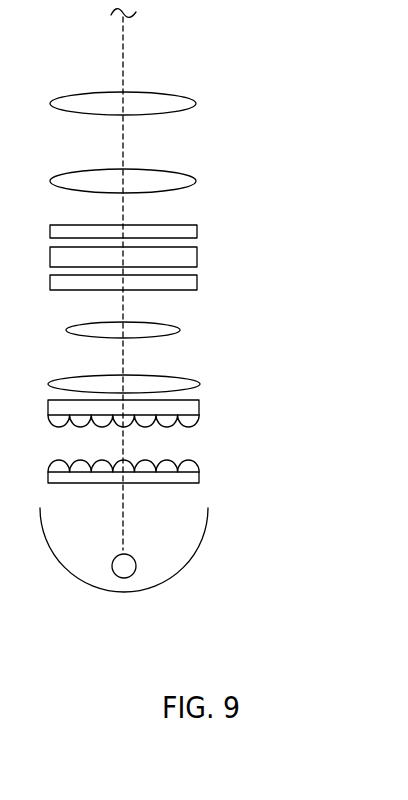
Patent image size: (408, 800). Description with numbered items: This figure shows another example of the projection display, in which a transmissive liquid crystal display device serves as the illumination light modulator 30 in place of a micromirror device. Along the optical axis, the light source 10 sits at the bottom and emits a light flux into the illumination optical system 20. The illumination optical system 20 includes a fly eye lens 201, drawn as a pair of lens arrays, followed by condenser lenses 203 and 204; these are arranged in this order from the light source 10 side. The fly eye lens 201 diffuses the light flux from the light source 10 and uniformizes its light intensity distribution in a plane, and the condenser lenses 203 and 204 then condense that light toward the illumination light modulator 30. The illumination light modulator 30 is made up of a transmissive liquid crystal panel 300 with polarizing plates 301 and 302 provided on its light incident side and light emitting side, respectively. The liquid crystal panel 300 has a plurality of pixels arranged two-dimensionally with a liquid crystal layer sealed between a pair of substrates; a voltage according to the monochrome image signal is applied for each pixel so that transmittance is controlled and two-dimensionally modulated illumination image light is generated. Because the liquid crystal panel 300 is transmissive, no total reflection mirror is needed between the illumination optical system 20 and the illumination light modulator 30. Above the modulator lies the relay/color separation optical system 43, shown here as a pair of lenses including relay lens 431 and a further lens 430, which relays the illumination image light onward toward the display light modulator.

The light source 10 is at (193, 575).
The illumination optical system 20 is at (186, 398).
The fly eye lens 201 is at (160, 441).
The condenser lens 203 is at (200, 384).
The condenser lens 204 is at (180, 329).
The illumination light modulator 30 is at (184, 256).
The liquid crystal panel 300 is at (197, 256).
The polarizing plate 301 is at (197, 282).
The polarizing plate 302 is at (197, 230).
The relay/color separation optical system 43 is at (184, 109).
The lens 430 is at (160, 179).
The relay lens 431 is at (197, 103).